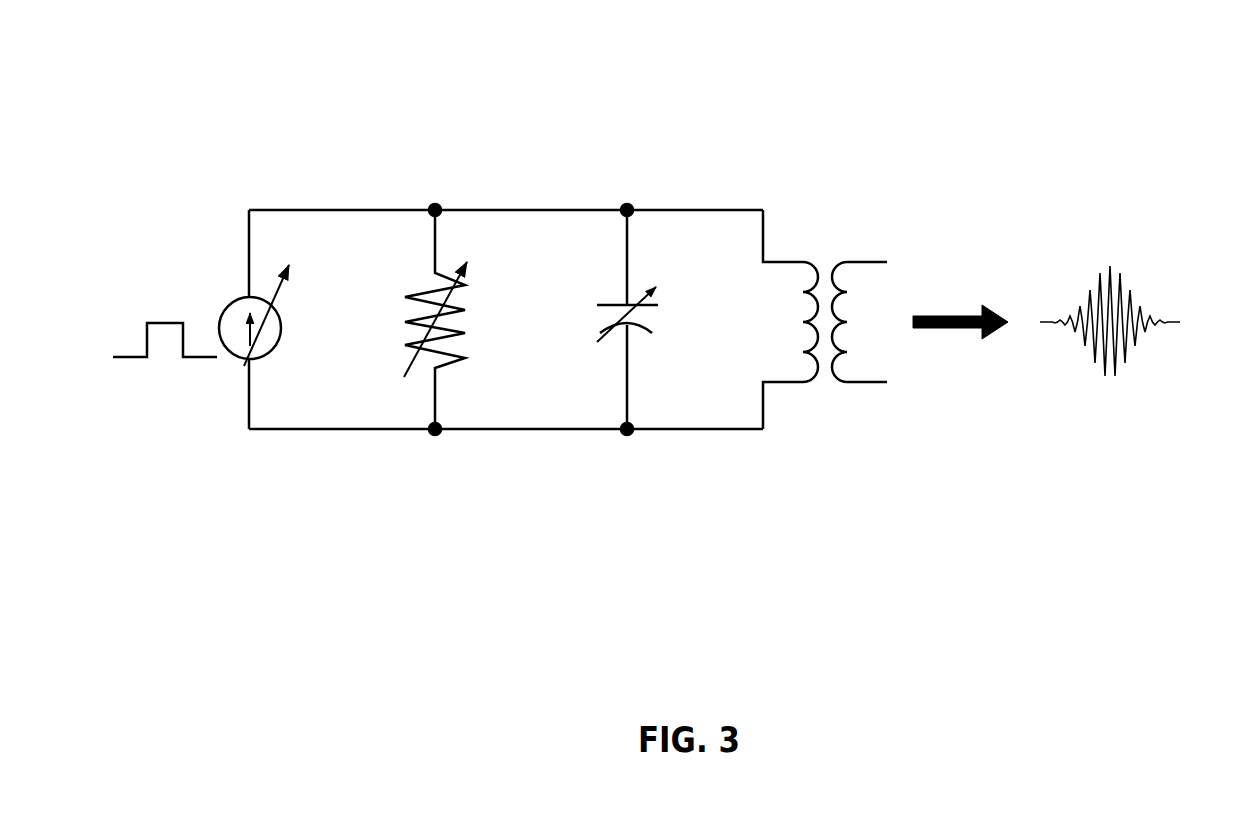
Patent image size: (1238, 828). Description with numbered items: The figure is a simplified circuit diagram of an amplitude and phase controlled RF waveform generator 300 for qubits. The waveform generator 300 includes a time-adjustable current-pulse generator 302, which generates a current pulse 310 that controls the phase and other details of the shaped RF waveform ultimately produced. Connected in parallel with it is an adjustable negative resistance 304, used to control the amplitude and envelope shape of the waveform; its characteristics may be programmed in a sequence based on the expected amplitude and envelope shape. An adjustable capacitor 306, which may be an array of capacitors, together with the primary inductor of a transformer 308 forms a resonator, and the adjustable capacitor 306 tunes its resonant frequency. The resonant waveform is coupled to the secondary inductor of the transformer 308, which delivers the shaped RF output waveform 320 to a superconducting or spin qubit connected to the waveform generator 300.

The waveform generator 300 is at (157, 111).
The current-pulse generator 302 is at (245, 361).
The adjustable negative resistance 304 is at (404, 377).
The adjustable capacitor 306 is at (597, 342).
The transformer 308 is at (825, 410).
The current pulse 310 is at (117, 328).
The output waveform 320 is at (1151, 292).